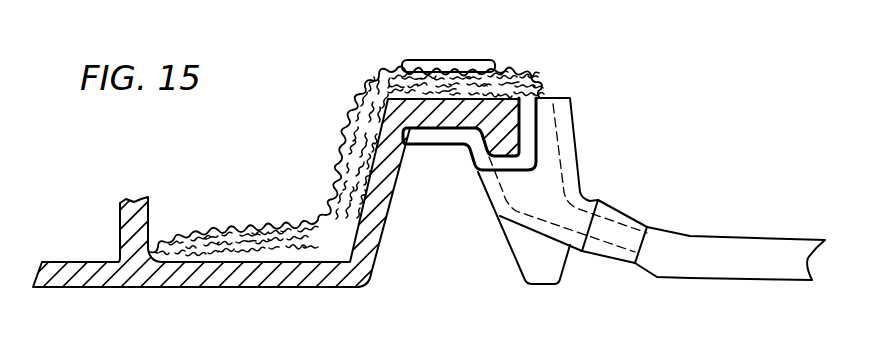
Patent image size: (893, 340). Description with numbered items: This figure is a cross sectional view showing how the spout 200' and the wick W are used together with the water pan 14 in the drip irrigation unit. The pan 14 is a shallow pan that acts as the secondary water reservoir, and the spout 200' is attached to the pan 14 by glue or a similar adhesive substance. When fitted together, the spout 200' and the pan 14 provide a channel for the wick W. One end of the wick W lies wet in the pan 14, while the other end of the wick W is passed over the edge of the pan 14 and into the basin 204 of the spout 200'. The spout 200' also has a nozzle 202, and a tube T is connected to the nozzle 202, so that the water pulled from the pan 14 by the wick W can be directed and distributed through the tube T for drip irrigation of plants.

The water pan 14 is at (450, 60).
The wick W is at (353, 111).
The spout 200' is at (534, 106).
The basin 204 is at (575, 152).
The nozzle 202 is at (593, 201).
The tube T is at (710, 233).